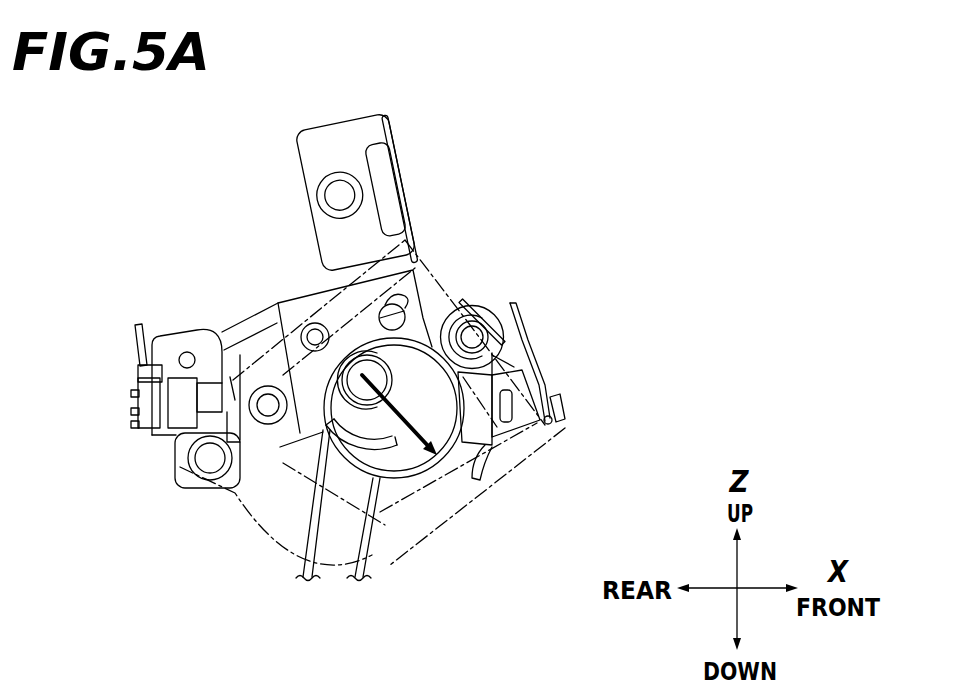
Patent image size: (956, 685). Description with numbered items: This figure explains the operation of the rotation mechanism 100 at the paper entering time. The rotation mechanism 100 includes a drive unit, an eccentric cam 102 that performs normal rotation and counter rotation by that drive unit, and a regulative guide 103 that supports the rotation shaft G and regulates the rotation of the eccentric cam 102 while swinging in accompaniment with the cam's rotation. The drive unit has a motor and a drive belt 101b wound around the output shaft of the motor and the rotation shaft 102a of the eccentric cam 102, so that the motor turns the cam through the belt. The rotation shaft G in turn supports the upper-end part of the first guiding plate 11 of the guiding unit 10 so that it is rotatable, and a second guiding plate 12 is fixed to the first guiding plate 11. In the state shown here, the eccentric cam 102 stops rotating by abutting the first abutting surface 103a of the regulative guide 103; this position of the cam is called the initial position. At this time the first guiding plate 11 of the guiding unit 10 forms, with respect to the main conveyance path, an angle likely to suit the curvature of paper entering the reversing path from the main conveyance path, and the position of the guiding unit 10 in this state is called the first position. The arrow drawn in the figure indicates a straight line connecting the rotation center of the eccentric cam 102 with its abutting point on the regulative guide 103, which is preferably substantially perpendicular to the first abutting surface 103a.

The rotation mechanism 100 is at (415, 187).
The eccentric cam 102 is at (400, 453).
The rotation shaft of the eccentric cam 102a is at (321, 434).
The drive belt 101b is at (360, 543).
The rotation shaft G is at (480, 324).
The second guiding plate 12 is at (519, 306).
The guiding unit 10 is at (531, 345).
The first guiding plate 11 is at (487, 460).
The regulative guide 103 is at (517, 440).
The first abutting surface 103a is at (455, 452).